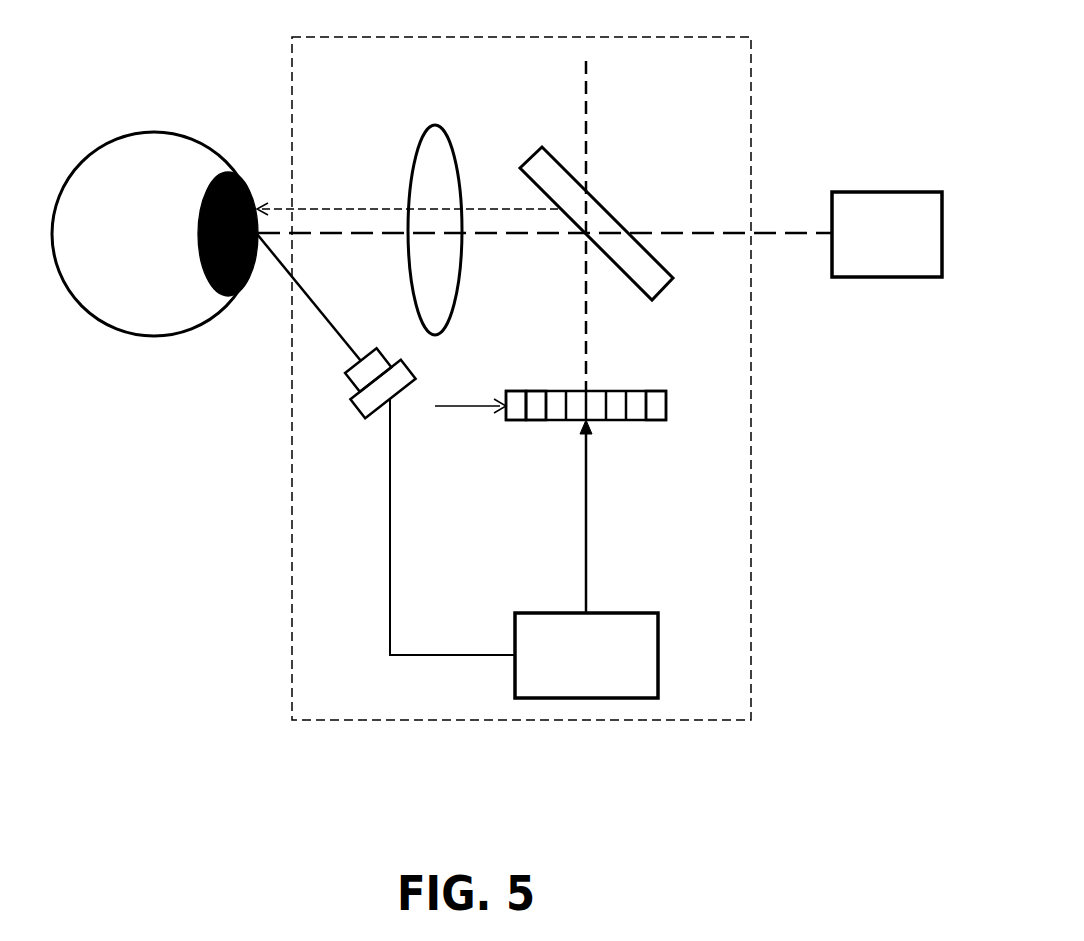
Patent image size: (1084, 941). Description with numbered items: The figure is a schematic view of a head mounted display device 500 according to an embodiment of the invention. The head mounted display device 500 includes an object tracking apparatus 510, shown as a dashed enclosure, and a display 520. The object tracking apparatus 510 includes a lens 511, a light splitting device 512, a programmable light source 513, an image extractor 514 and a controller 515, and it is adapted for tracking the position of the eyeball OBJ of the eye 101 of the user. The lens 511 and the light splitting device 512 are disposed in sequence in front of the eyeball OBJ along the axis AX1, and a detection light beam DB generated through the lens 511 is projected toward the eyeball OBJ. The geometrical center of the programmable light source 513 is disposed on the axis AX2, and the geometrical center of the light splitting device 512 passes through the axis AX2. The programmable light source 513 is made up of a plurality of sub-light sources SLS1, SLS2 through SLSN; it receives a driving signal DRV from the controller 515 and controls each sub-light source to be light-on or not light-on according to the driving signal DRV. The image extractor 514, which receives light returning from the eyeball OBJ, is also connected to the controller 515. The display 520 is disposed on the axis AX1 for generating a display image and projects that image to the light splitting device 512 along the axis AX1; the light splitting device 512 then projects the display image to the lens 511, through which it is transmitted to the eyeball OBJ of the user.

The eye 101 is at (105, 143).
The eyeball OBJ is at (212, 185).
The object tracking apparatus 510 is at (642, 37).
The lens 511 is at (448, 137).
The light splitting device 512 is at (542, 148).
The programmable light source 513 is at (668, 405).
The image extractor 514 is at (366, 400).
The controller 515 is at (617, 612).
The display 520 is at (878, 192).
The head mounted display device 500 is at (894, 800).
The detection light beam DB is at (340, 208).
The axis AX1 is at (805, 230).
The axis AX2 is at (587, 128).
The driving signal DRV is at (618, 543).
The sub-light source SLS1 is at (517, 412).
The sub-light source SLS2 is at (537, 413).
The sub-light source SLSN is at (655, 413).